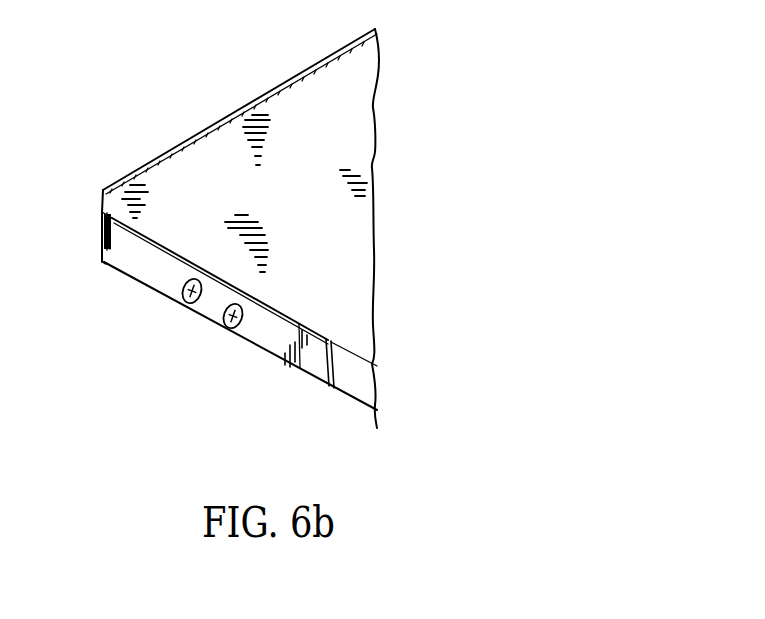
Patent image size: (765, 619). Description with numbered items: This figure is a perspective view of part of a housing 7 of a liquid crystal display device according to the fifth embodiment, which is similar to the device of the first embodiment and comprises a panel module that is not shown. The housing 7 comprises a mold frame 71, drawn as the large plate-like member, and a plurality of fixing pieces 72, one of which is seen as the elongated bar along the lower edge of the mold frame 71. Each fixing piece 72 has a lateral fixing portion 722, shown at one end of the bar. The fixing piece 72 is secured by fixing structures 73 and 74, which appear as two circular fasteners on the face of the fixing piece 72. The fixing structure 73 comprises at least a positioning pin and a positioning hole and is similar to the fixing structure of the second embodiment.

The housing 7 is at (172, 397).
The mold frame 71 is at (365, 220).
The fixing piece 72 is at (132, 268).
The lateral fixing portion 722 is at (303, 368).
The fixing structure 73 is at (183, 297).
The fixing structure 74 is at (237, 330).